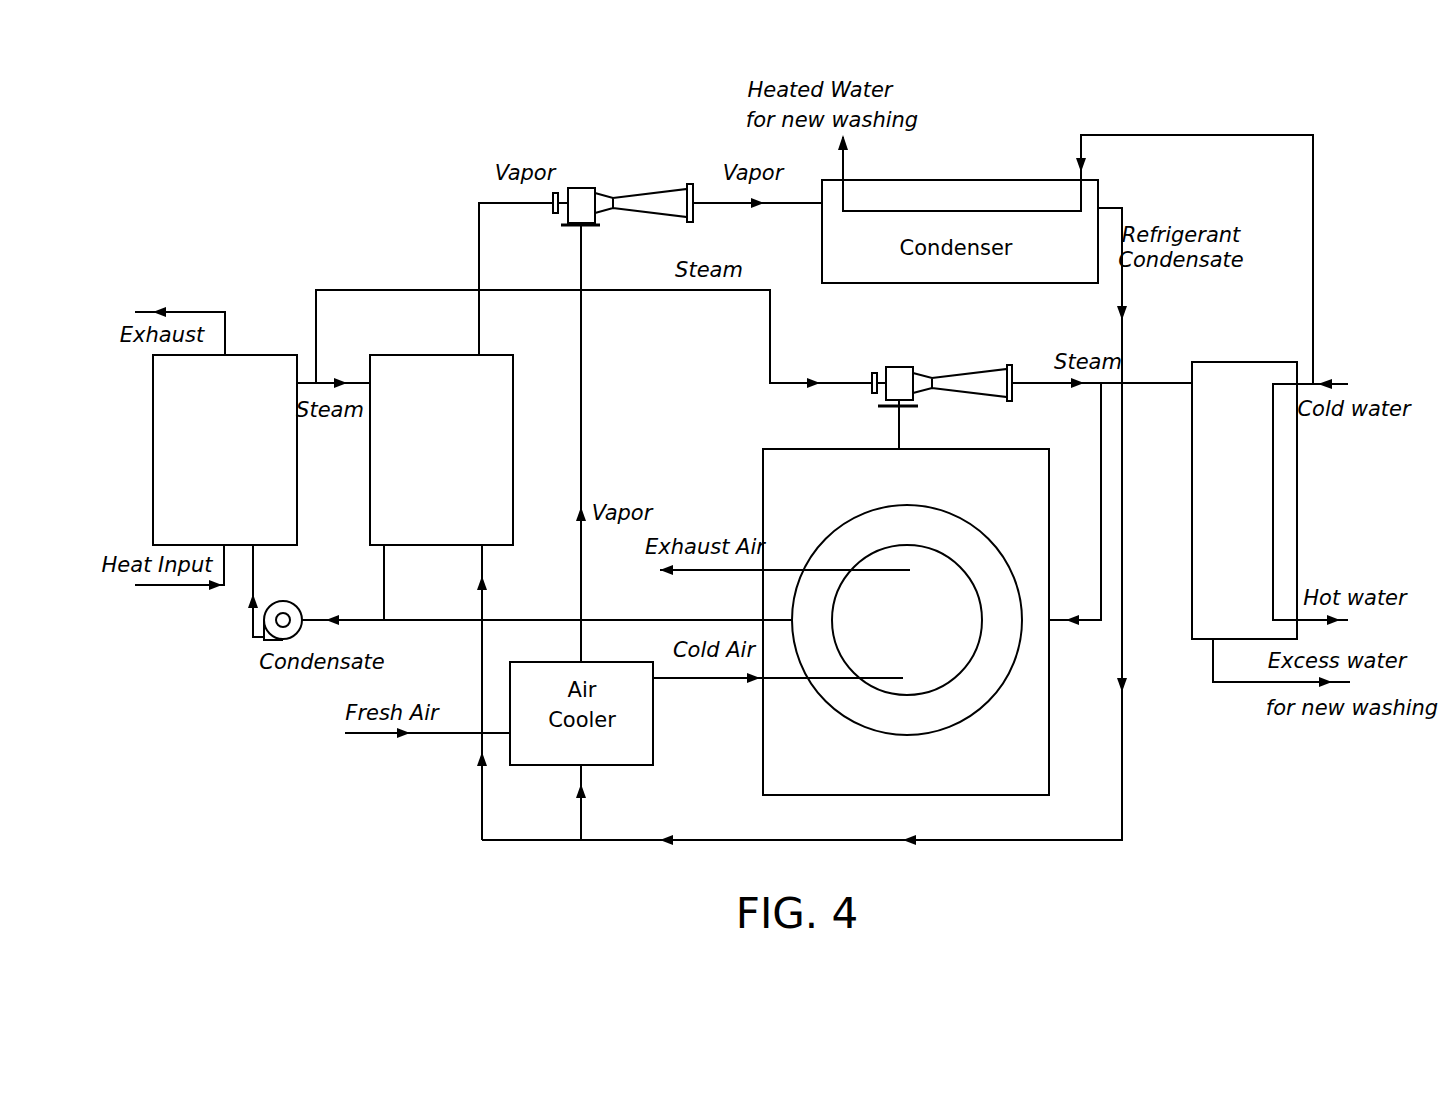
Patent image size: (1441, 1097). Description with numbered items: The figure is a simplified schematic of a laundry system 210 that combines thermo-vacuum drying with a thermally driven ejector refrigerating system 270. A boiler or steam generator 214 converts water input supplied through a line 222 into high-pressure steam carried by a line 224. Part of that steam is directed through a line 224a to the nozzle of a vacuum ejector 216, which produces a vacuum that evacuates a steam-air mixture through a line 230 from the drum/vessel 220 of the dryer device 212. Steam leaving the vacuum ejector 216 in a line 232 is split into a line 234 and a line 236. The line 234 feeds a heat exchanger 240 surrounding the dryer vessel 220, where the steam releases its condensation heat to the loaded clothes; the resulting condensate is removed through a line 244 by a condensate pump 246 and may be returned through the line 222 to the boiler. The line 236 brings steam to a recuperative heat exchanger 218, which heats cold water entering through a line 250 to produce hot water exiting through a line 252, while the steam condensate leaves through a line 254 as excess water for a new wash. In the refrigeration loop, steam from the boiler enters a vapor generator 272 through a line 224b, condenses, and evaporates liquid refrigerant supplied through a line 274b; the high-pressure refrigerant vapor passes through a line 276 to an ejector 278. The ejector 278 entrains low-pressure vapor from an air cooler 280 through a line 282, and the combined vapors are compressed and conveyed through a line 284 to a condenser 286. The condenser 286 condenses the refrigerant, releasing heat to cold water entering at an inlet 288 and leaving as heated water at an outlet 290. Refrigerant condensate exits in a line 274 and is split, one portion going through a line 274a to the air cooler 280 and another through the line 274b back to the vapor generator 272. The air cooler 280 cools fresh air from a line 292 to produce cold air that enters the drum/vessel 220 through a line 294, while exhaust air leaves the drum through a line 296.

The laundry system 210 is at (1326, 103).
The dryer device 212 is at (1008, 795).
The boiler or steam generator 214 is at (153, 470).
The vacuum ejector 216 is at (870, 374).
The recuperative heat exchanger 218 is at (1298, 495).
The drum/vessel 220 is at (925, 545).
The line 222 is at (252, 613).
The line 224 is at (309, 382).
The line 224a is at (770, 337).
The line 224b is at (350, 382).
The line 230 is at (900, 430).
The line 232 is at (1034, 381).
The line 234 is at (1102, 625).
The line 236 is at (1158, 381).
The heat exchanger 240 is at (1003, 690).
The line 244 is at (510, 619).
The condensate pump 246 is at (270, 644).
The line 250 is at (1330, 382).
The line 252 is at (1333, 622).
The line 254 is at (1241, 683).
The ejector refrigerating system 270 is at (395, 893).
The vapor generator 272 is at (422, 400).
The line 274 is at (1123, 212).
The line 274a is at (580, 816).
The line 274b is at (481, 790).
The line 276 is at (493, 201).
The ejector 278 is at (673, 190).
The air cooler 280 is at (622, 766).
The line 282 is at (583, 467).
The line 284 is at (712, 201).
The condenser 286 is at (984, 180).
The inlet 288 is at (1074, 176).
The outlet 290 is at (850, 166).
The line 292 is at (362, 734).
The line 294 is at (698, 679).
The line 296 is at (715, 571).